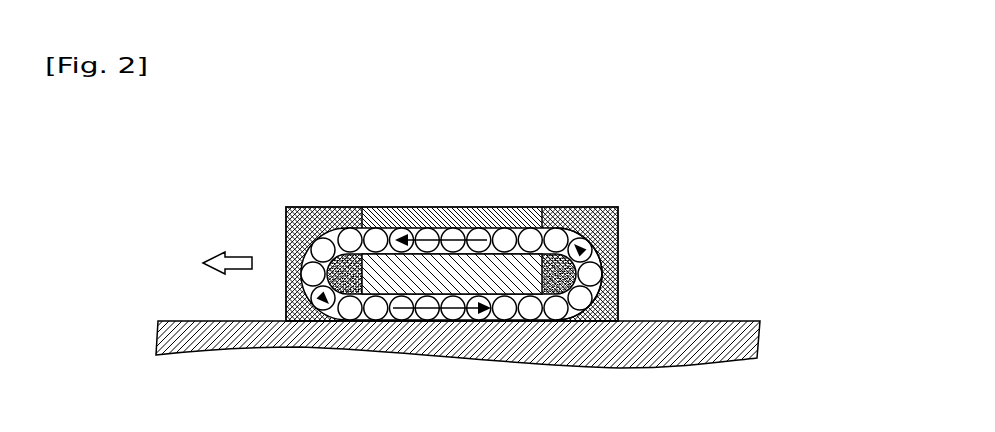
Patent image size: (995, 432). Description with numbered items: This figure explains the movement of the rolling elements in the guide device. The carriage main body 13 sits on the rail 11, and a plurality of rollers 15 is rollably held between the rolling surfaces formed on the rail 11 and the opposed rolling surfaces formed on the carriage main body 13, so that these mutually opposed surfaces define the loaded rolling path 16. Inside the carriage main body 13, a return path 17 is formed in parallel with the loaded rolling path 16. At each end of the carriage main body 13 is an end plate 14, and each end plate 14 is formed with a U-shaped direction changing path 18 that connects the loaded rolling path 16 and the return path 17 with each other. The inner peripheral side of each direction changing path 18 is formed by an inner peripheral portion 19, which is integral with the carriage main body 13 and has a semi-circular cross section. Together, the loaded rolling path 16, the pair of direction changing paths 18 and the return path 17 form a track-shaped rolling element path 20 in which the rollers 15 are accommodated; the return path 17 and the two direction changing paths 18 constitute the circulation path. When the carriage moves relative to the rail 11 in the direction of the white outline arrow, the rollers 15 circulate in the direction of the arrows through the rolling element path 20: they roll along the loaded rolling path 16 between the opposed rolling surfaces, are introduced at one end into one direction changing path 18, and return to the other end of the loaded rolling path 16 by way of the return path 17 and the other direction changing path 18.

The rail 11 is at (407, 338).
The carriage main body 13 is at (408, 207).
The end plates 14 is at (329, 207).
The rollers 15 is at (350, 322).
The loaded rolling path 16 is at (497, 318).
The return path 17 is at (495, 229).
The direction changing path 18 is at (613, 242).
The inner peripheral portion 19 is at (580, 273).
The rolling element path 20 is at (466, 228).